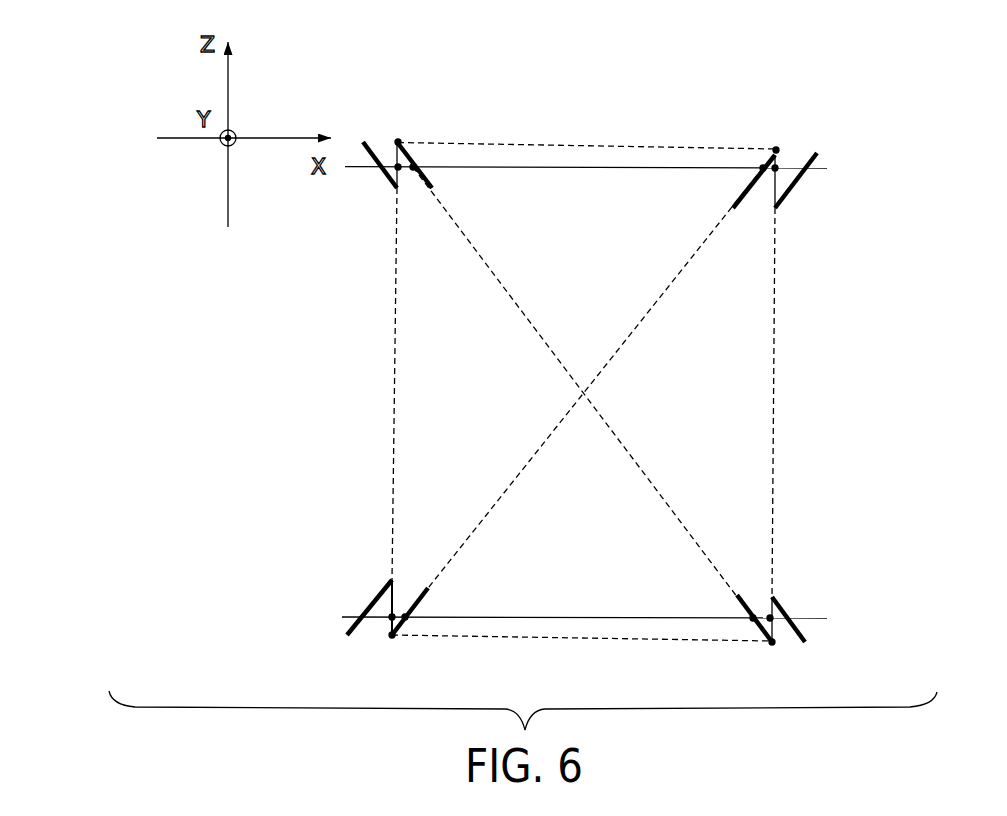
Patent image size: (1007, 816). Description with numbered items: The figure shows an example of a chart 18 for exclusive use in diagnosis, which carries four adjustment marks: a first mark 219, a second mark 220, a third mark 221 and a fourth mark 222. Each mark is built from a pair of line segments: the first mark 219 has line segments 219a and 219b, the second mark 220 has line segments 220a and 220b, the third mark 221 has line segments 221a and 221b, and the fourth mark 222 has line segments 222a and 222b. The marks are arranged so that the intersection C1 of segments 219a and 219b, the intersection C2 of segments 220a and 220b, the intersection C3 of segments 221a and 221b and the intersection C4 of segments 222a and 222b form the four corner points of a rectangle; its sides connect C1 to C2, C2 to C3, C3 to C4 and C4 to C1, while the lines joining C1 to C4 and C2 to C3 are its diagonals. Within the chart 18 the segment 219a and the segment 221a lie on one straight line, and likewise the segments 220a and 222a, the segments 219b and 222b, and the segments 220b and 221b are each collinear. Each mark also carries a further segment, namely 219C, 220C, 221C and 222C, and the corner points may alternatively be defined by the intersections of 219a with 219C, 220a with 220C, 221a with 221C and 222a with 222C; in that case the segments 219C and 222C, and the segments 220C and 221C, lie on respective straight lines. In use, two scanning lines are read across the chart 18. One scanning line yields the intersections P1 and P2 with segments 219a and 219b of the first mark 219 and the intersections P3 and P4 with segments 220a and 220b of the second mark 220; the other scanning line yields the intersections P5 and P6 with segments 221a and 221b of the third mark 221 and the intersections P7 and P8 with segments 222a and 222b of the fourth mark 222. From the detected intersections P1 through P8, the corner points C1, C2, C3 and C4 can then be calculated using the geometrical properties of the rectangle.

The chart 18 is at (852, 370).
The first mark 219 is at (397, 174).
The line segment 219a is at (402, 187).
The line segment 219b is at (431, 185).
The line segment 219C is at (383, 181).
The second mark 220 is at (766, 178).
The line segment 220a is at (773, 193).
The line segment 220b is at (737, 197).
The line segment 220C is at (805, 175).
The third mark 221 is at (406, 608).
The line segment 221a is at (393, 592).
The line segment 221b is at (430, 588).
The line segment 221C is at (367, 610).
The fourth mark 222 is at (781, 618).
The line segment 222a is at (768, 602).
The line segment 222b is at (750, 615).
The line segment 222C is at (805, 638).
The intersection P1 is at (397, 166).
The intersection P2 is at (414, 165).
The intersection P3 is at (763, 168).
The intersection P4 is at (776, 169).
The intersection P5 is at (389, 620).
The intersection P6 is at (407, 617).
The intersection P7 is at (750, 628).
The intersection P8 is at (772, 622).
The intersection C1 is at (398, 142).
The intersection C2 is at (774, 149).
The intersection C3 is at (392, 637).
The intersection C4 is at (772, 646).